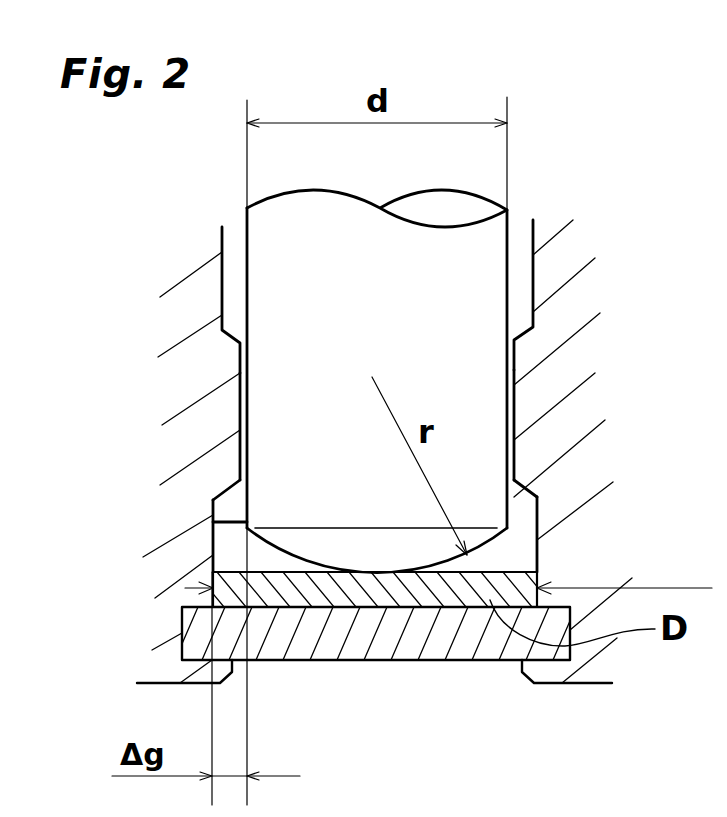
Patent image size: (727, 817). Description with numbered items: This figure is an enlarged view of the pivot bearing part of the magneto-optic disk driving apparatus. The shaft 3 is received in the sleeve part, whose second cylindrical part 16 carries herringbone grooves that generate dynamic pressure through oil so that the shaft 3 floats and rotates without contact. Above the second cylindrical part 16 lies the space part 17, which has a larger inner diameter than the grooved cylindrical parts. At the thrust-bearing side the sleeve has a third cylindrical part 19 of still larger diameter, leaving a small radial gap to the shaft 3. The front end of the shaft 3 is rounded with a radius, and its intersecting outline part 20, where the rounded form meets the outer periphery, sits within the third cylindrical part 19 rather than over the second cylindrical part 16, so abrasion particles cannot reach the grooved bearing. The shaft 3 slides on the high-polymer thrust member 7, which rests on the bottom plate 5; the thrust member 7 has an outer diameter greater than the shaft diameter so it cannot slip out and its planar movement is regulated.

The shaft 3 is at (463, 278).
The bottom plate 5 is at (475, 627).
The thrust member 7 is at (552, 582).
The second cylindrical part 16 is at (238, 418).
The space part 17 is at (237, 271).
The third cylindrical part 19 is at (212, 548).
The intersecting outline part 20 is at (212, 519).